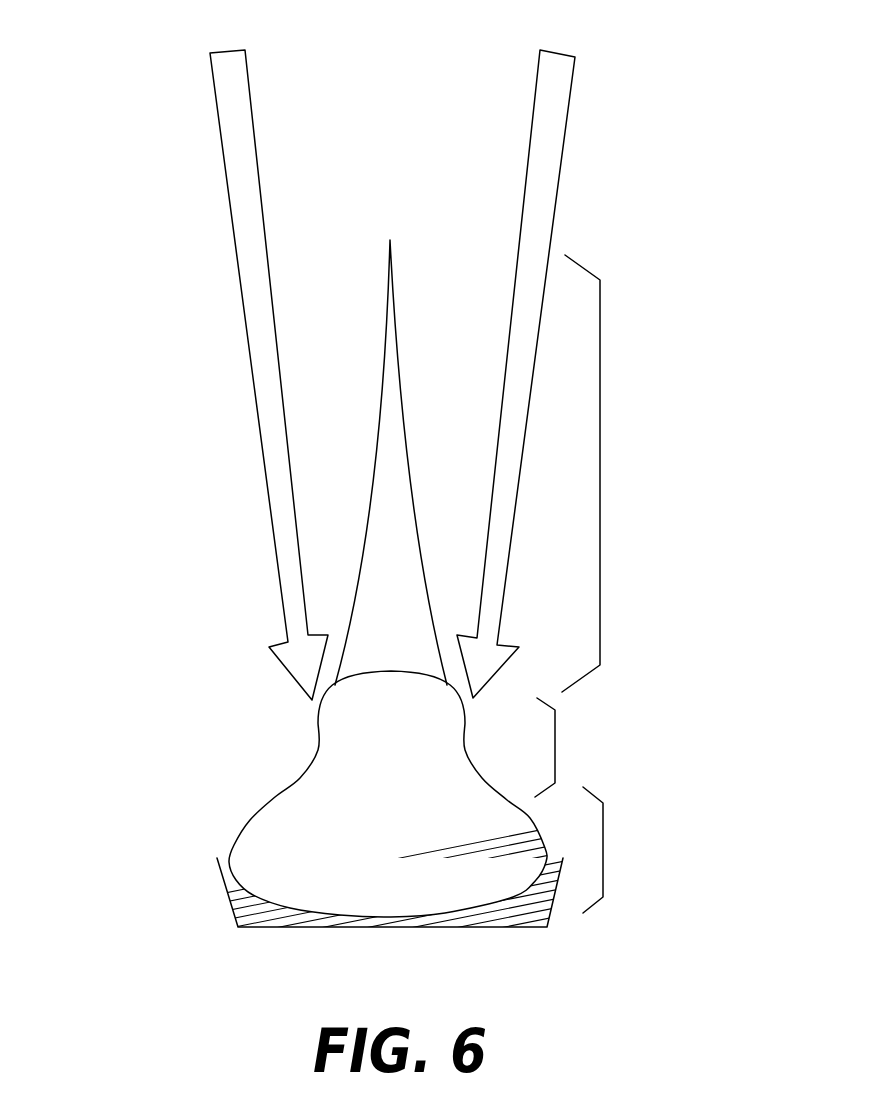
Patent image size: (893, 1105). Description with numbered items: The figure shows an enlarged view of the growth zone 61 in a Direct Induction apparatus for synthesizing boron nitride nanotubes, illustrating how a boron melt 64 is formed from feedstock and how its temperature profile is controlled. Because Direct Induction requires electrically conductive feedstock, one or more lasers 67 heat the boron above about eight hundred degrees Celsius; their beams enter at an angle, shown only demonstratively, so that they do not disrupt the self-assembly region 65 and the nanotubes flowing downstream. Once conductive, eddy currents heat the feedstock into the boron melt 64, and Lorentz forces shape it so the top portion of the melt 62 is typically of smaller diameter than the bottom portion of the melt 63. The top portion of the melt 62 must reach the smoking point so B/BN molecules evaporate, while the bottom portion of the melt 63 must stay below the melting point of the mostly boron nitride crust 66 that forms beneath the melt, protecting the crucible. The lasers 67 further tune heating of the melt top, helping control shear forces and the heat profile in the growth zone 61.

The growth zone 61 is at (600, 481).
The top portion of the melt 62 is at (555, 748).
The bottom portion of the melt 63 is at (603, 850).
The boron melt 64 is at (318, 745).
The self-assembly region 65 is at (373, 505).
The boron nitride crust 66 is at (238, 927).
The lasers 67 is at (250, 98).